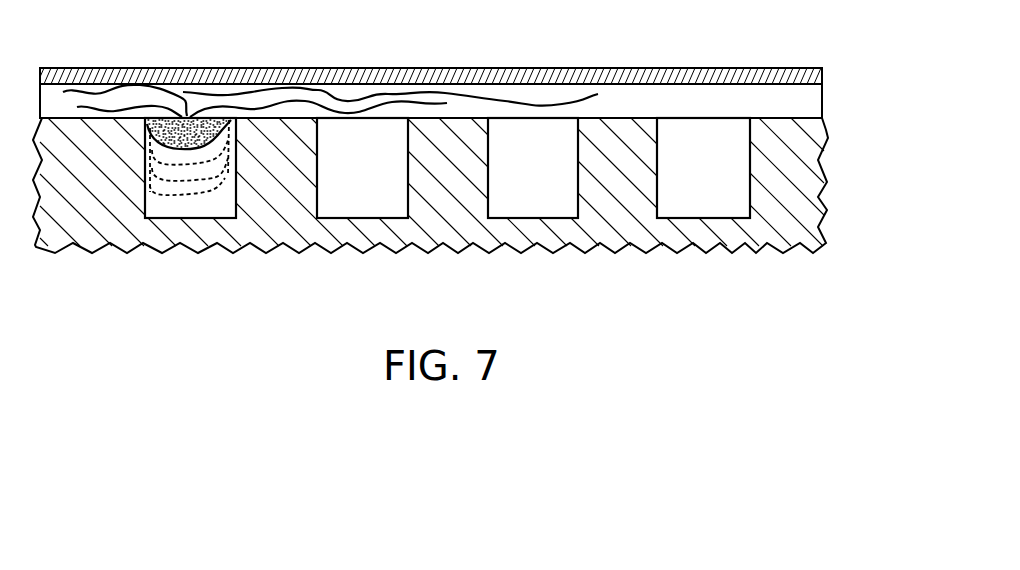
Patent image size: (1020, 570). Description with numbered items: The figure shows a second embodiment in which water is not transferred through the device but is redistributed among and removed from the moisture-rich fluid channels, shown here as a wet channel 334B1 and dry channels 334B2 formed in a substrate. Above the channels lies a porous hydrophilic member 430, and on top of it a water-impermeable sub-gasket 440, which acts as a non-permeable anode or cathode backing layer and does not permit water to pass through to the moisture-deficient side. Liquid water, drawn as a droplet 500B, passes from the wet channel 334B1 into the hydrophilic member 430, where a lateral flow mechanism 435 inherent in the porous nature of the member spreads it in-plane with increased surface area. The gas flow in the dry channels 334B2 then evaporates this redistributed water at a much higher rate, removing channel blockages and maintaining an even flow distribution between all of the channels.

The hydrophilic member 430 is at (823, 96).
The lateral flow mechanism 435 is at (275, 92).
The sub-gasket 440 is at (92, 72).
The droplet 500B is at (148, 140).
The wet channel 334B1 is at (197, 212).
The dry channels 334B2 is at (765, 254).